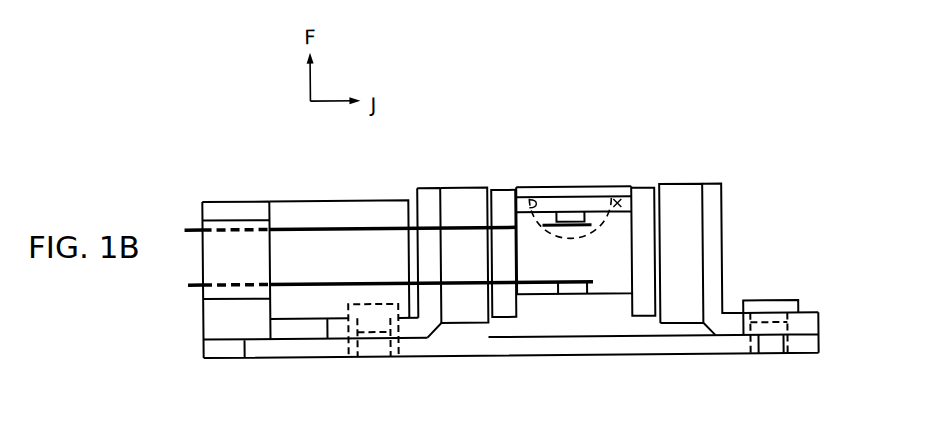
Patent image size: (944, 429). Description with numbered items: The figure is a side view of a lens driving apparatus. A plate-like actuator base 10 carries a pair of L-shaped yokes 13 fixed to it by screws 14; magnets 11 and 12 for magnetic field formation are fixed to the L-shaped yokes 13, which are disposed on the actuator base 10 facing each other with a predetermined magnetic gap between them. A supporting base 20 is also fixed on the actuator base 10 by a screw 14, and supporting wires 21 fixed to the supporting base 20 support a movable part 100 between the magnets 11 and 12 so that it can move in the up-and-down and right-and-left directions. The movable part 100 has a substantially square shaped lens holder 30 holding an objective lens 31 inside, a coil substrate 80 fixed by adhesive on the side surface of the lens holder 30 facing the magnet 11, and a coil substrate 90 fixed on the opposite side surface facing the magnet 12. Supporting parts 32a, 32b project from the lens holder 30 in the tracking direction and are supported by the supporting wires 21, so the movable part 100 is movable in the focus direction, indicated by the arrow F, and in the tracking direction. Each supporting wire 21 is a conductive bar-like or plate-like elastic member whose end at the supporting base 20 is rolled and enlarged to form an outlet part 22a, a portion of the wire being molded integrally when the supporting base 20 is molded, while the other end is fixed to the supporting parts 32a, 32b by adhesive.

The movable part 100 is at (645, 109).
The actuator base 10 is at (735, 357).
The magnet 11 is at (688, 186).
The magnet 12 is at (467, 186).
The L-shaped yoke 13 is at (428, 187).
The screw 14 is at (377, 347).
The supporting base 20 is at (258, 198).
The supporting wire 21 is at (344, 226).
The outlet part 22a is at (188, 224).
The lens holder 30 is at (607, 253).
The objective lens 31 is at (571, 194).
The supporting part 32a is at (578, 212).
The supporting part 32b is at (567, 295).
The coil substrate 80 is at (640, 189).
The coil substrate 90 is at (500, 189).